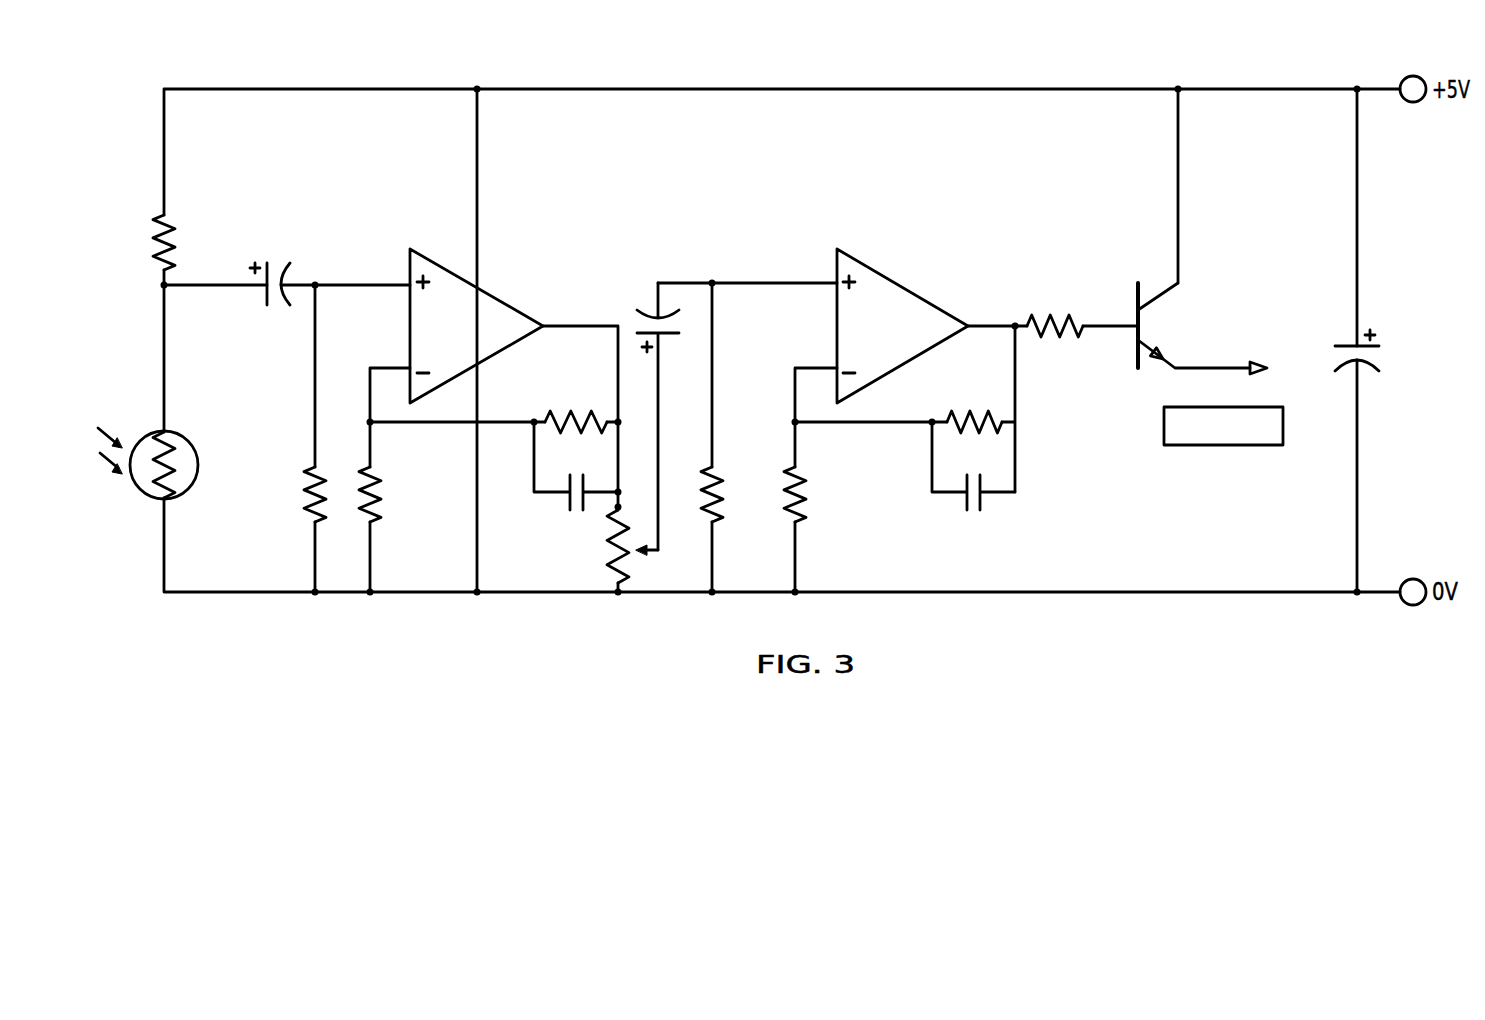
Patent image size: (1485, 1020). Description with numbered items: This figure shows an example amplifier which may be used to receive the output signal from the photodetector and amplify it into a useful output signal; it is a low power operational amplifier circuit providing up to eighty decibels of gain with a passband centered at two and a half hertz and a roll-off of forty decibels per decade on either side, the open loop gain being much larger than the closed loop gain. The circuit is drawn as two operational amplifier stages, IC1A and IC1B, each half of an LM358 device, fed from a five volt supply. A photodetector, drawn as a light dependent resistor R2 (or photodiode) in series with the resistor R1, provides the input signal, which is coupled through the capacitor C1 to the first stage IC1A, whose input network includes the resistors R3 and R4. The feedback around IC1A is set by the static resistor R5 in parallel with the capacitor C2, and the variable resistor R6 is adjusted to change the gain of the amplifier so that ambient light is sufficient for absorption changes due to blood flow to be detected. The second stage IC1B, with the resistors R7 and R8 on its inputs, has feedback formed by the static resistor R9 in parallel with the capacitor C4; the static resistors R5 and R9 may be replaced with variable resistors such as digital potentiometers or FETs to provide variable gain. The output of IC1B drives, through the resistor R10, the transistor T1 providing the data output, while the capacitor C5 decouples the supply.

The resistor 39k R1 is at (183, 240).
The LDR or photodiode R2 is at (202, 493).
The resistor 68k R3 is at (295, 438).
The resistor 8.2k R4 is at (392, 480).
The static resistor R5 is at (494, 427).
The variable resistor R6 is at (618, 551).
The resistor 68k R7 is at (731, 437).
The resistor 1k R8 is at (812, 480).
The static resistor R9 is at (905, 409).
The resistor 1.8k R10 is at (1082, 327).
The capacitor 1uF C1 is at (476, 378).
The capacitor 100nF C2 is at (555, 483).
The capacitor 100nF C4 is at (954, 483).
The capacitor 47uF C5 is at (1338, 332).
The op amp LM358 first half IC1A is at (504, 379).
The op amp LM358 second half IC1B is at (922, 326).
The transistor BC547 T1 is at (1195, 364).